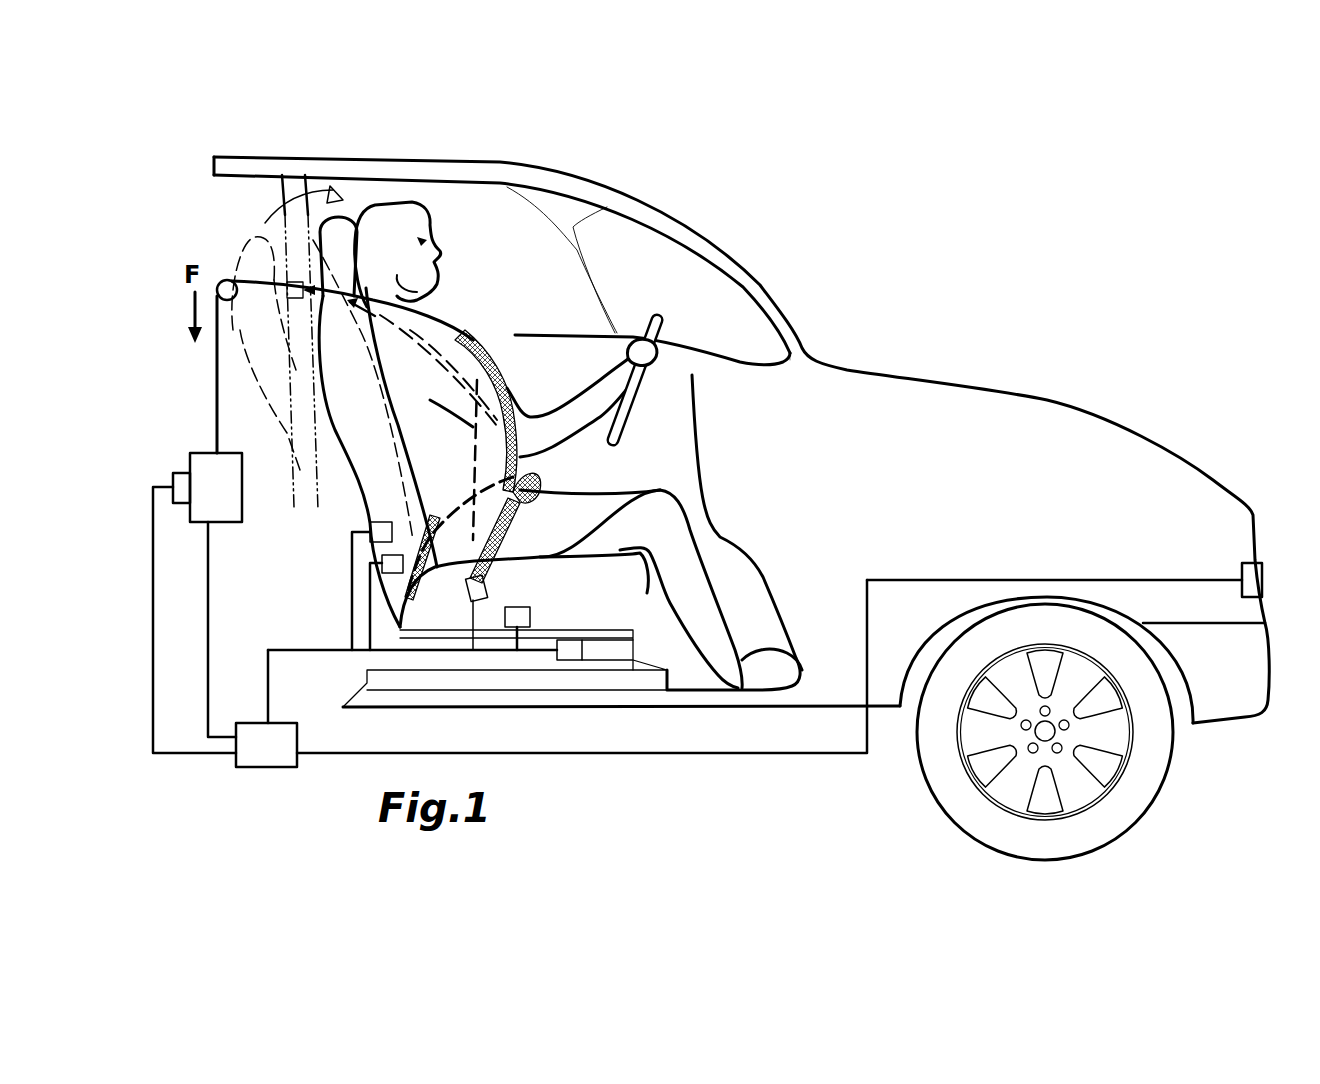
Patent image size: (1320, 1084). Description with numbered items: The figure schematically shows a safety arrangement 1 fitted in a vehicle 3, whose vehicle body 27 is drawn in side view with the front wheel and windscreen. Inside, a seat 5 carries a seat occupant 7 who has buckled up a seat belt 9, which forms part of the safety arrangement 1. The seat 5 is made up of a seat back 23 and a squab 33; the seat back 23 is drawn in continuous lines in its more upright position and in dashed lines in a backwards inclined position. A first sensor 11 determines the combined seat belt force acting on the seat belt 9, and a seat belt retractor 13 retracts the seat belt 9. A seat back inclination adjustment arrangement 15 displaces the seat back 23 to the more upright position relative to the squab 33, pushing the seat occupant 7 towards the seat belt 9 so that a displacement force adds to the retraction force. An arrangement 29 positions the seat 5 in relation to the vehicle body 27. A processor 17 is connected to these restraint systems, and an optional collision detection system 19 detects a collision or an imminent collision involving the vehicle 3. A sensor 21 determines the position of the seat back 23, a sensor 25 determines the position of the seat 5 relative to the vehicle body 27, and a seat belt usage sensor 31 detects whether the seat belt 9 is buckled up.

The safety arrangement 1 is at (640, 295).
The vehicle 3 is at (980, 315).
The seat 5 is at (613, 650).
The seat occupant 7 is at (455, 238).
The seat belt 9 is at (494, 457).
The first sensor 11 is at (180, 483).
The seat belt retractor 13 is at (226, 518).
The seat back inclination adjustment arrangement 15 is at (395, 567).
The processor 17 is at (255, 740).
The collision detection system 19 is at (1250, 568).
The sensor 21 is at (375, 532).
The seat back 23 is at (334, 401).
The sensor 25 is at (570, 655).
The vehicle body 27 is at (811, 436).
The arrangement for positioning the seat 29 is at (520, 619).
The seat belt usage sensor 31 is at (487, 590).
The squab 33 is at (524, 611).